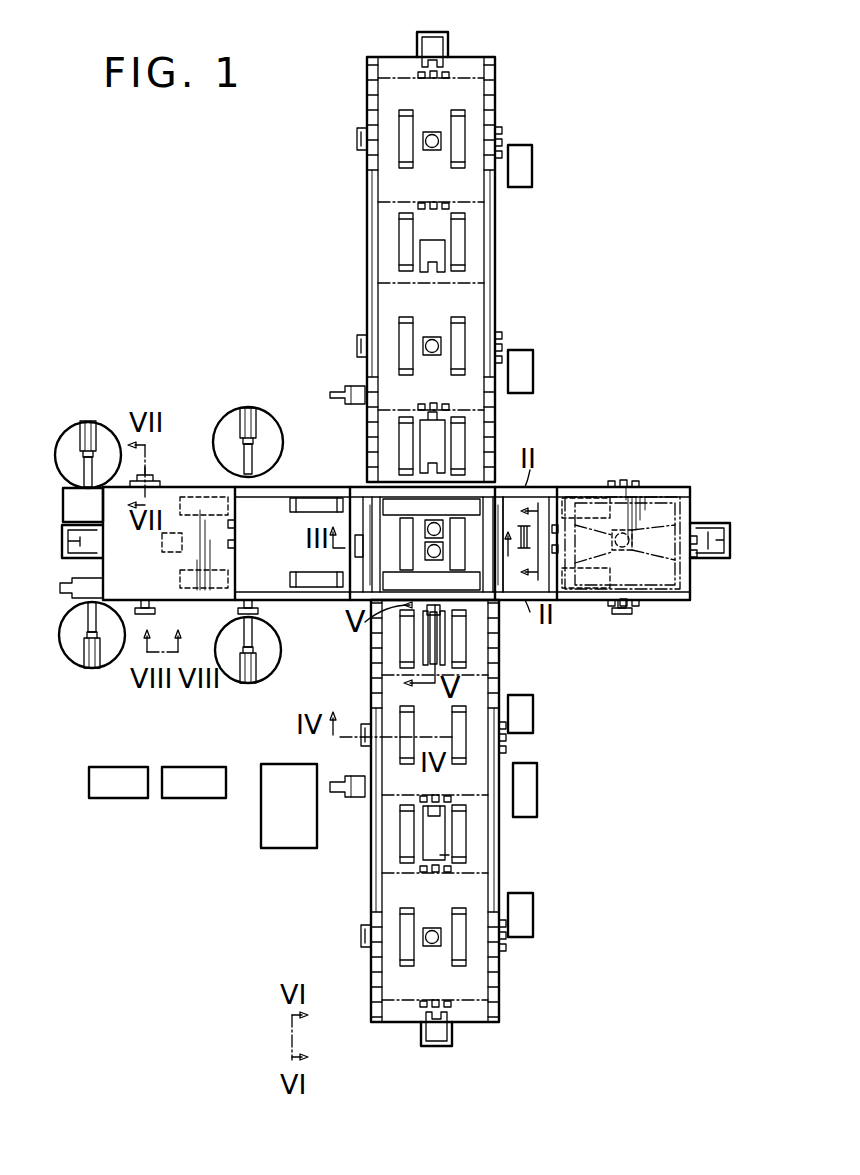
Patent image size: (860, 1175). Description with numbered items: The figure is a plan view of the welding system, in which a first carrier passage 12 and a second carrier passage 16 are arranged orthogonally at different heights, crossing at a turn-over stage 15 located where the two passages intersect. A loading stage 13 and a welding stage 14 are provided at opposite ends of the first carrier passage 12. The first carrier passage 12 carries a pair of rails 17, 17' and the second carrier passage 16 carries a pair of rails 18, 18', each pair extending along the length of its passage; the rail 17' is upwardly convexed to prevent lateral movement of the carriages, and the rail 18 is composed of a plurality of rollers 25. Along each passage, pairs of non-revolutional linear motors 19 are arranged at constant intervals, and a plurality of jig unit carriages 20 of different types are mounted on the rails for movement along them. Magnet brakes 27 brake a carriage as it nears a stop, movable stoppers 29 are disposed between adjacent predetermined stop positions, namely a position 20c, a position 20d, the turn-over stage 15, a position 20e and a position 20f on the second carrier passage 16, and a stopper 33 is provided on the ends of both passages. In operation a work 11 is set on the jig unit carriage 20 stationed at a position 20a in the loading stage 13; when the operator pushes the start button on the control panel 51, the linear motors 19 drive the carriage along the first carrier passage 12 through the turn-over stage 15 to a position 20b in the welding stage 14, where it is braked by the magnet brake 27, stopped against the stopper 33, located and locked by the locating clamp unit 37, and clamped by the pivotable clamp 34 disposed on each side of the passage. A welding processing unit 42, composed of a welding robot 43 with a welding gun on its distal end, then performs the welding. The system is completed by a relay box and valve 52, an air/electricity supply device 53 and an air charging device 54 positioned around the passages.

The work 11 is at (83, 597).
The first carrier passage 12 is at (331, 600).
The loading stage 13 is at (625, 485).
The welding stage 14 is at (161, 476).
The turn-over stage 15 is at (515, 600).
The second carrier passage 16 is at (499, 318).
The rail 17 is at (314, 567).
The rail 17' is at (308, 444).
The rail 18 is at (407, 204).
The rail 18' is at (459, 305).
The linear motor 19 is at (400, 130).
The jig unit carriage 20 is at (680, 577).
The position 20a is at (664, 487).
The position 20b is at (215, 487).
The position 20c is at (467, 78).
The position 20d is at (470, 284).
The position 20e is at (490, 676).
The position 20f is at (478, 874).
The roller 25 is at (378, 80).
The magnet brake 27 is at (443, 520).
The movable stopper 29 is at (447, 648).
The stopper 33 is at (432, 38).
The clamp 34 is at (140, 622).
The locating clamp unit 37 is at (636, 608).
The welding processing unit 42 is at (60, 631).
The welding robot 43 is at (86, 423).
The control panel 51 is at (89, 798).
The relay box and valve 52 is at (533, 165).
The air/electricity supply device 53 is at (350, 392).
The air charging device 54 is at (578, 606).